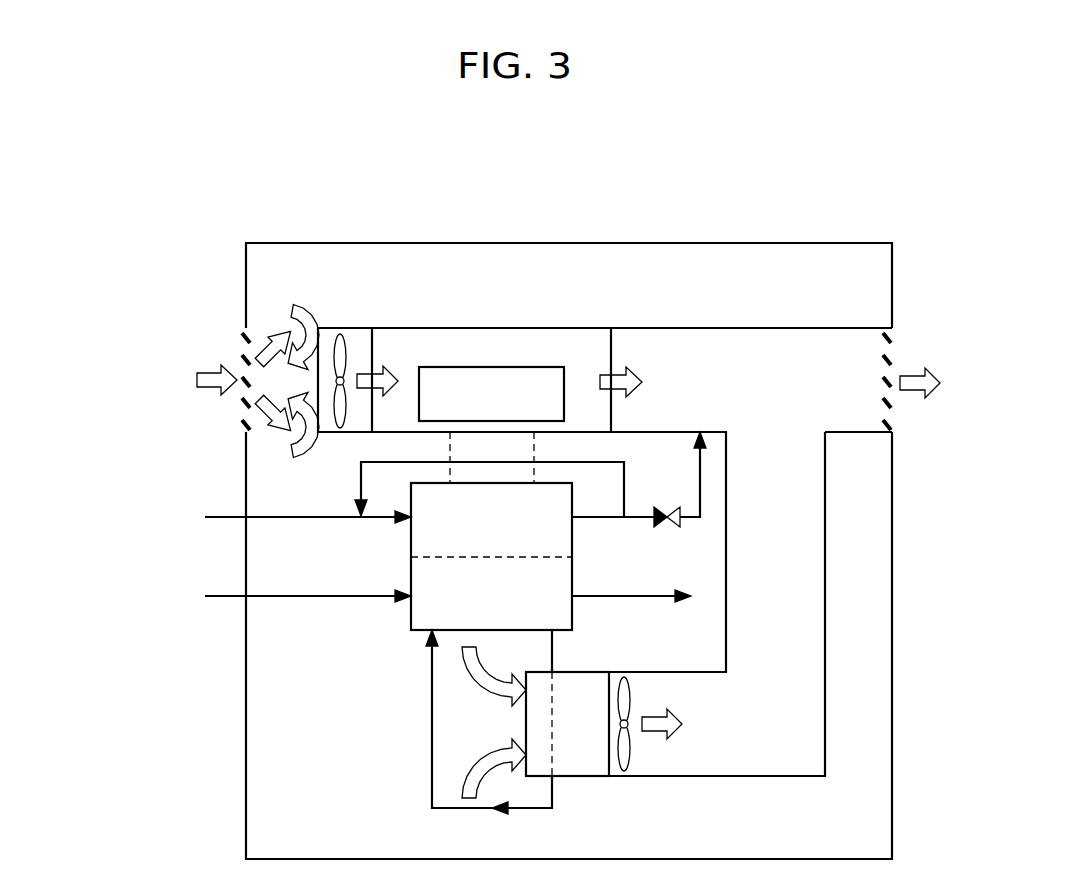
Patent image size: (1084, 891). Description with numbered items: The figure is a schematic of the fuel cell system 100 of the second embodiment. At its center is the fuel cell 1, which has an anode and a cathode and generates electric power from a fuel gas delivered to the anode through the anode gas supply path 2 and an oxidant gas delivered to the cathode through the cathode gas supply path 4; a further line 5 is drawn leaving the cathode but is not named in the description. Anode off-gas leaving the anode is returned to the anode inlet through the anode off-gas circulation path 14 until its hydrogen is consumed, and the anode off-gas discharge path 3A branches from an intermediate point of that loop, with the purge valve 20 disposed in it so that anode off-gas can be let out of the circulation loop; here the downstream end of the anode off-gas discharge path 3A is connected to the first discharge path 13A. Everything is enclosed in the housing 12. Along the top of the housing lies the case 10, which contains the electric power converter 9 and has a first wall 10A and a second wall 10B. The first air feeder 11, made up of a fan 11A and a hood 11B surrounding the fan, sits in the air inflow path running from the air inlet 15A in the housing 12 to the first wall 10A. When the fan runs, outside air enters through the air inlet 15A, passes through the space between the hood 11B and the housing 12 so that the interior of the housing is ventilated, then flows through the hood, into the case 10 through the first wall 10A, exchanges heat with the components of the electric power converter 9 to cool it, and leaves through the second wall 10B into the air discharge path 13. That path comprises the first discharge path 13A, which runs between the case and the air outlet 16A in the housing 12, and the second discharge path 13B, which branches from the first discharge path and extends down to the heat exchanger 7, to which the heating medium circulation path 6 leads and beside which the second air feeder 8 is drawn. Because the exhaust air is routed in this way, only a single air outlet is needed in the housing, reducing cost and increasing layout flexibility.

The fuel cell system 100 is at (302, 157).
The fuel cell 1 is at (411, 575).
The anode gas supply path 2 is at (316, 520).
The anode off-gas discharge path 3A is at (638, 520).
The cathode gas supply path 4 is at (316, 599).
The cathode off-gas discharge passage 5 is at (640, 600).
The heating medium circulation path 6 is at (432, 736).
The heat exchanger 7 is at (575, 780).
The second air feeder 8 is at (630, 752).
The electric power converter 9 is at (515, 366).
The case 10 is at (541, 329).
The first wall 10A is at (372, 356).
The second wall 10B is at (612, 352).
The first air feeder 11 is at (389, 295).
The fan 11A is at (332, 332).
The hood 11B is at (347, 332).
The housing 12 is at (779, 244).
The air discharge path 13 is at (605, 552).
The first discharge path 13A is at (816, 395).
The second discharge path 13B is at (816, 571).
The anode off-gas circulation path 14 is at (627, 476).
The air inlet 15A is at (229, 359).
The air outlet 16A is at (898, 353).
The purge valve 20 is at (668, 528).